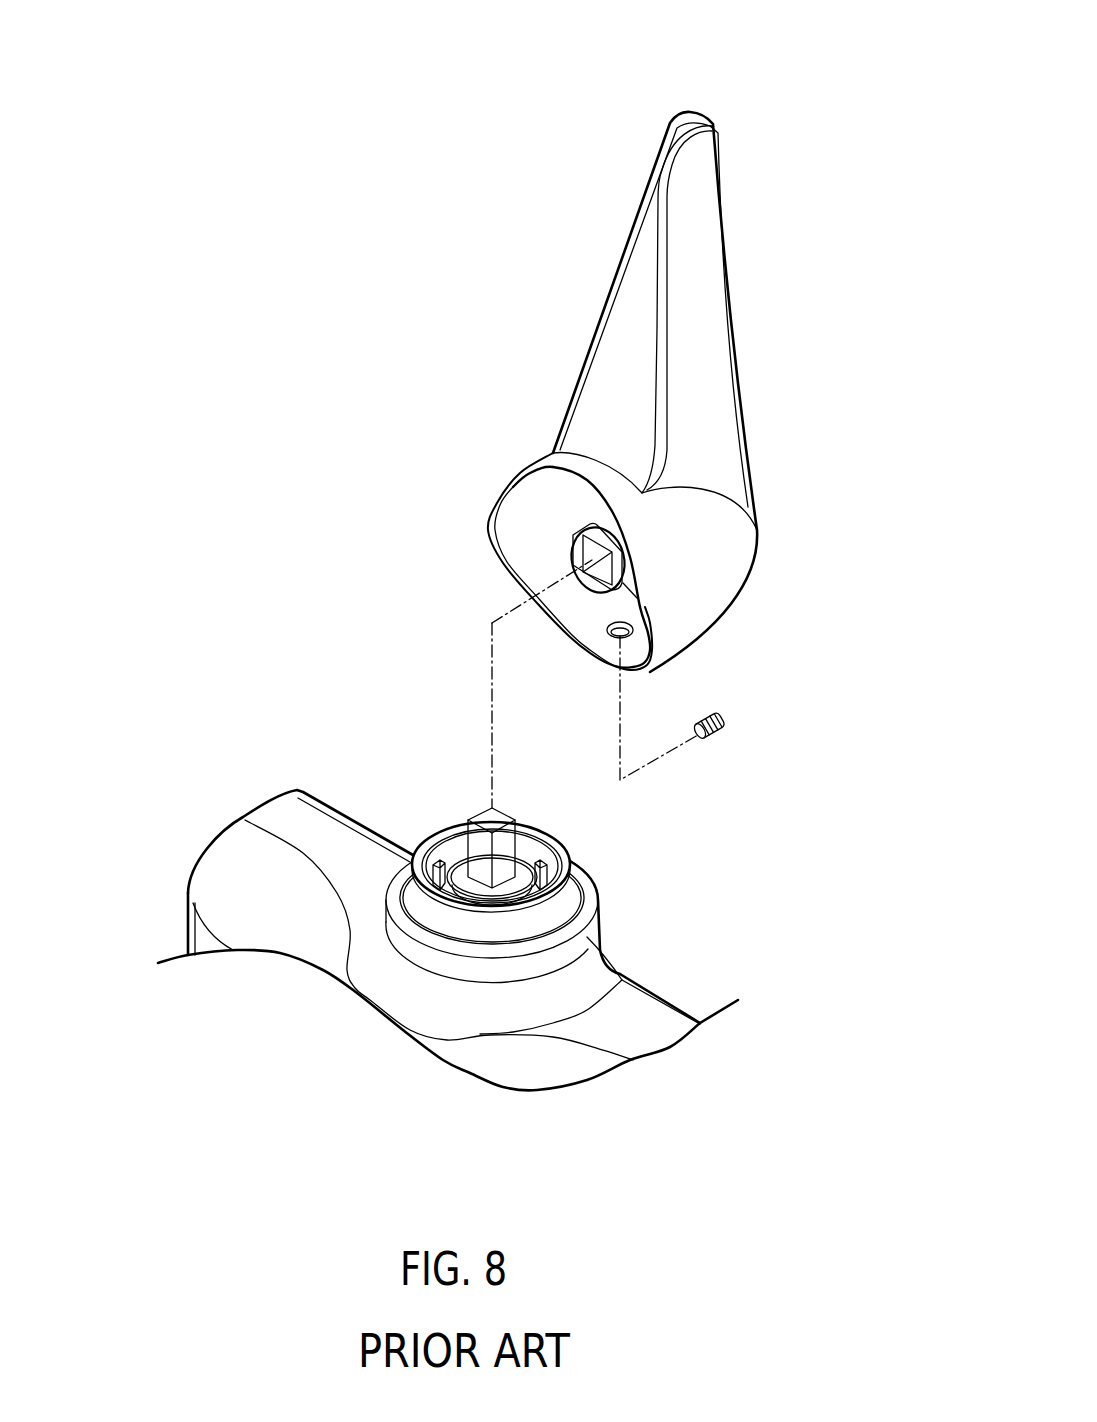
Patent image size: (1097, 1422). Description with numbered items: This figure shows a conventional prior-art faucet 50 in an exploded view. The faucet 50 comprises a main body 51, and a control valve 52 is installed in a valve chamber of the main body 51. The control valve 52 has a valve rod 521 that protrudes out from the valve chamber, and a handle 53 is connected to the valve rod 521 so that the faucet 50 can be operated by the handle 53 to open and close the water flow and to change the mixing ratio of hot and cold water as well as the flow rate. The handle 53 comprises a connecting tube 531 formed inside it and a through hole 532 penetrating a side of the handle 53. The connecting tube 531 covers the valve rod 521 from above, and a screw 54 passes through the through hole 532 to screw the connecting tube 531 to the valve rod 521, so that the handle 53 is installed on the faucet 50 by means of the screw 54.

The faucet 50 is at (160, 934).
The main body 51 is at (643, 1008).
The control valve 52 is at (553, 873).
The valve rod 521 is at (483, 815).
The handle 53 is at (689, 118).
The connecting tube 531 is at (578, 550).
The through hole 532 is at (622, 635).
The screw 54 is at (722, 733).